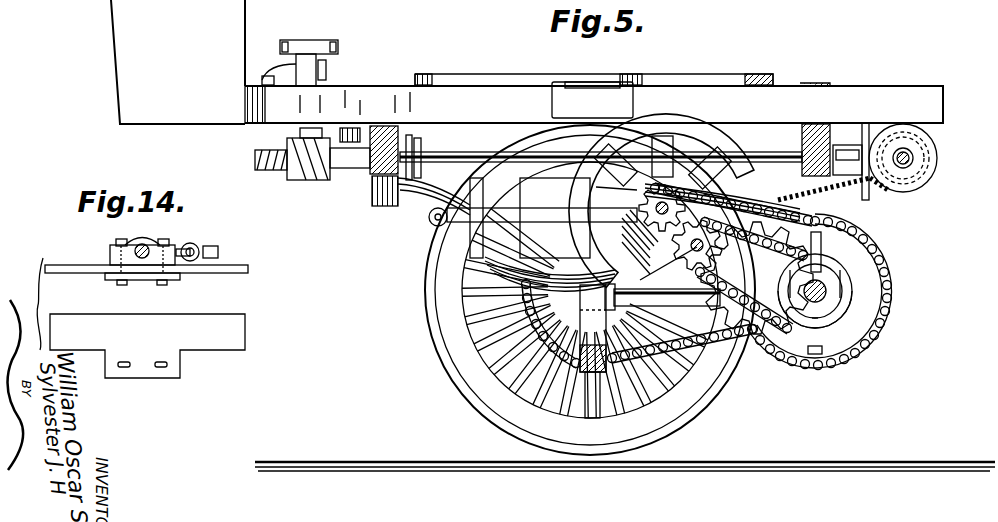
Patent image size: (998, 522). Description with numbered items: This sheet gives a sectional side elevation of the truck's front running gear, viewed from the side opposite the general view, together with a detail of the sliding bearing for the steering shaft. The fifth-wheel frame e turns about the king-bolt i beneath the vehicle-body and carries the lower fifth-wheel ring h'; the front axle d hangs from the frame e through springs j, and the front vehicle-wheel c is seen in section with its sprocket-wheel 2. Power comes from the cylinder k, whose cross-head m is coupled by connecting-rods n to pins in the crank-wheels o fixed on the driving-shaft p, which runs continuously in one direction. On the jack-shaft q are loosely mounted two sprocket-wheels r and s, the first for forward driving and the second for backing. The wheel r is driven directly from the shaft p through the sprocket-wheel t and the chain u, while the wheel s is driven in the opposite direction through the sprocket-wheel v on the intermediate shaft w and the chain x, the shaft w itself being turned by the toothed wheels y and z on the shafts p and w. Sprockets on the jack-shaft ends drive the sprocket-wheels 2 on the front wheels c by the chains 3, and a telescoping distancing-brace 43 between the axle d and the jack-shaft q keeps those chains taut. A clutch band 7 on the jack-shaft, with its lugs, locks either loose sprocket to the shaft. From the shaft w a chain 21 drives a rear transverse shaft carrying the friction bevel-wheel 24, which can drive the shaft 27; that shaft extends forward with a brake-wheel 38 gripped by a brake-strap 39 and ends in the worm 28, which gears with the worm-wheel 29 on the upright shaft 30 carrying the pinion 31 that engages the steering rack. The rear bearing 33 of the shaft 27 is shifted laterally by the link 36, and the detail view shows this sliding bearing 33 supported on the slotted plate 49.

In FIG. 5, the pinion 31 is at (330, 47).
In FIG. 5, the upright shaft 30 is at (300, 136).
In FIG. 5, the worm-wheel 29 is at (257, 161).
In FIG. 5, the worm 28 is at (316, 172).
In FIG. 5, the brake-strap 39 is at (414, 141).
In FIG. 5, the brake-wheel 38 is at (440, 158).
In FIG. 5, the shaft 27 is at (472, 156).
In FIG. 14, the shaft 27 is at (143, 245).
In FIG. 5, the distancing-brace 43 is at (662, 303).
In FIG. 5, the chain 3 is at (722, 343).
In FIG. 5, the sprocket-wheel 2 is at (551, 324).
In FIG. 5, the chain 21 is at (852, 200).
In FIG. 5, the friction bevel-wheel 24 is at (937, 158).
In FIG. 5, the band 7 is at (815, 323).
In FIG. 14, the bearing 33 is at (146, 254).
In FIG. 14, the link 36 is at (210, 252).
In FIG. 14, the slotted plate 49 is at (143, 271).
In FIG. 5, the fifth-wheel frame e is at (822, 114).
In FIG. 5, the lower fifth-wheel ring h' is at (594, 66).
In FIG. 5, the king-bolt i is at (595, 81).
In FIG. 5, the front vehicle-wheel c is at (590, 290).
In FIG. 5, the crank-wheel o is at (661, 200).
In FIG. 5, the driving-shaft p is at (633, 242).
In FIG. 5, the toothed wheel y is at (688, 194).
In FIG. 5, the cylinder k is at (555, 218).
In FIG. 5, the connecting-rod n is at (561, 212).
In FIG. 5, the spring j is at (772, 147).
In FIG. 5, the cross-head m is at (432, 224).
In FIG. 5, the sprocket-wheel t is at (662, 208).
In FIG. 5, the intermediate shaft w is at (697, 245).
In FIG. 5, the sprocket-wheel v is at (671, 263).
In FIG. 5, the sprocket-wheel s is at (757, 278).
In FIG. 5, the toothed wheel z is at (754, 237).
In FIG. 5, the sprocket-wheel r is at (873, 258).
In FIG. 5, the chain u is at (882, 317).
In FIG. 5, the chain x is at (840, 317).
In FIG. 5, the jack-shaft q is at (812, 303).
In FIG. 5, the front axle d is at (593, 351).